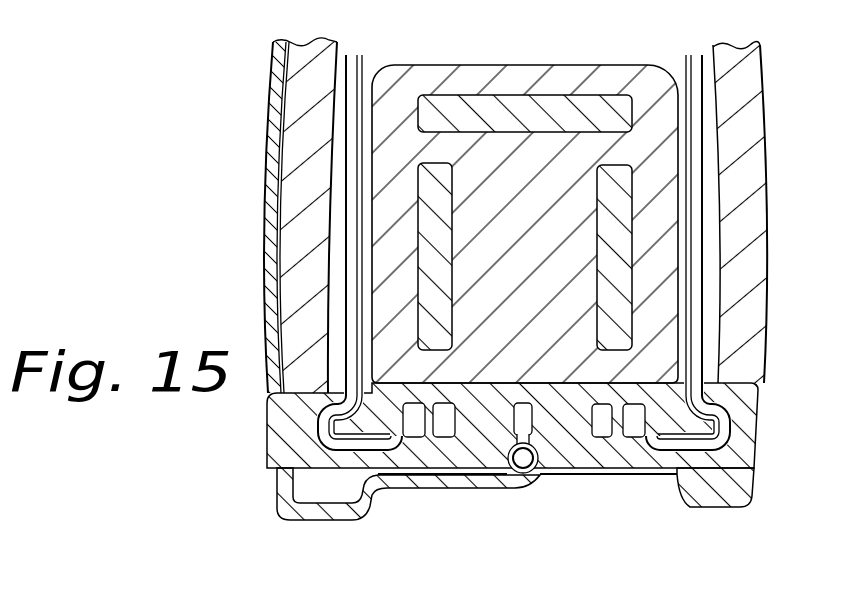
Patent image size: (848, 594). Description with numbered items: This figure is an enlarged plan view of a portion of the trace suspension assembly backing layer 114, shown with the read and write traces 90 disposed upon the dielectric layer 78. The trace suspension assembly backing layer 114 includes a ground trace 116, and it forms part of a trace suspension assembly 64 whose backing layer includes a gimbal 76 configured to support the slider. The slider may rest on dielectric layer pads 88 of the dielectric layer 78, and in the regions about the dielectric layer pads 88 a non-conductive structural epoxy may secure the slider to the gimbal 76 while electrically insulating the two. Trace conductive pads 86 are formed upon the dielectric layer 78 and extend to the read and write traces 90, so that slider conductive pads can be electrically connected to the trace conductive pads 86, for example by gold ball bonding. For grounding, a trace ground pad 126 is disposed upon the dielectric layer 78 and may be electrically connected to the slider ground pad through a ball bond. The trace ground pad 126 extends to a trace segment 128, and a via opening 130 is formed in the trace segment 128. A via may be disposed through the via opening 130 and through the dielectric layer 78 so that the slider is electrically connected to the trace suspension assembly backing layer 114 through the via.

The trace suspension assembly 64 is at (597, 203).
The gimbal 76 is at (476, 78).
The dielectric layer 78 is at (570, 453).
The trace conductive pads 86 is at (447, 423).
The dielectric layer pads 88 is at (607, 178).
The read and write traces 90 is at (362, 148).
The trace suspension assembly backing layer 114 is at (757, 90).
The ground trace 116 is at (270, 103).
The trace ground pad 126 is at (510, 457).
The trace segment 128 is at (522, 424).
The via opening 130 is at (523, 462).